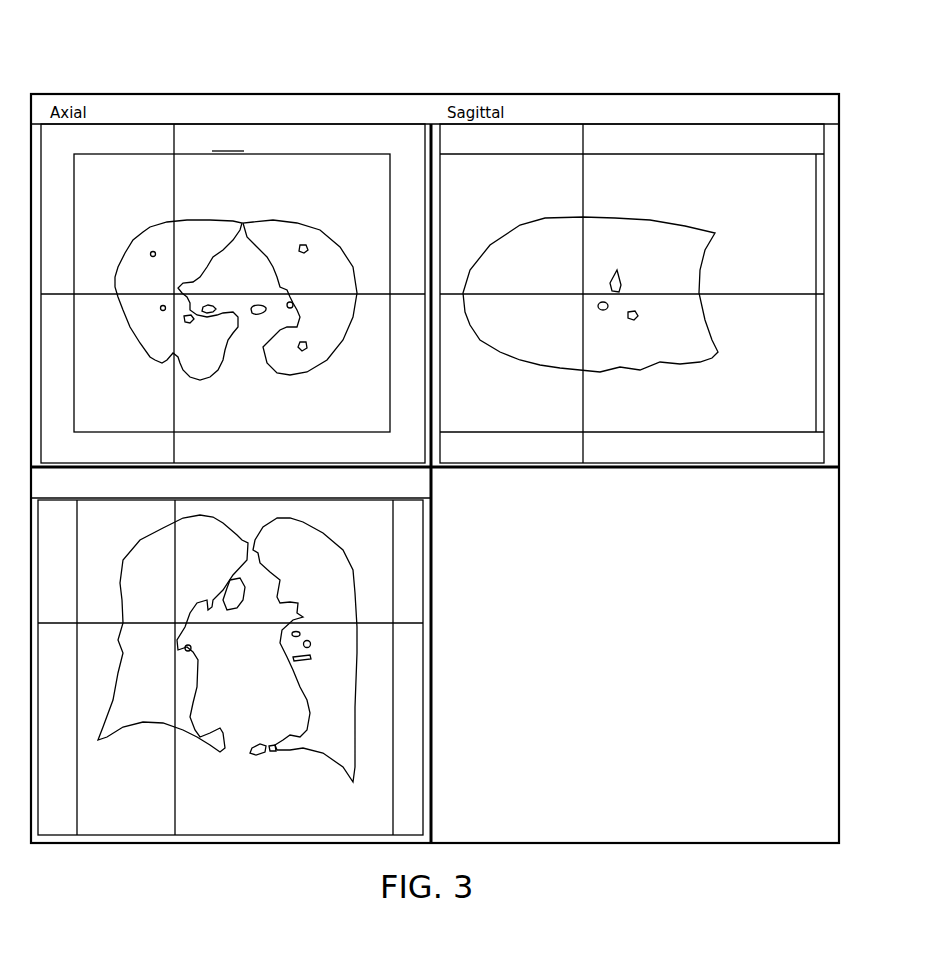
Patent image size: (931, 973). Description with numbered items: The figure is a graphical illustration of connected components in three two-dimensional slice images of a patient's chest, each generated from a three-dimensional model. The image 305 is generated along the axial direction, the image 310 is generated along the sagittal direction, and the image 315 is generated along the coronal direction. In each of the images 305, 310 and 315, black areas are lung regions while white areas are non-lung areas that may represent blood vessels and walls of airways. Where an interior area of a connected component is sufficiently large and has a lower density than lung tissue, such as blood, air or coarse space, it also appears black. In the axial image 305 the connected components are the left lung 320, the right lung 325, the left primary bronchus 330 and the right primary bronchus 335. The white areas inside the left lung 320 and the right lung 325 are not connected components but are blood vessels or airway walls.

The axial image 305 is at (110, 90).
The sagittal image 310 is at (499, 90).
The coronal image 315 is at (103, 858).
The left lung 320 is at (149, 230).
The right lung 325 is at (330, 227).
The left primary bronchus 330 is at (213, 299).
The right primary bronchus 335 is at (252, 300).